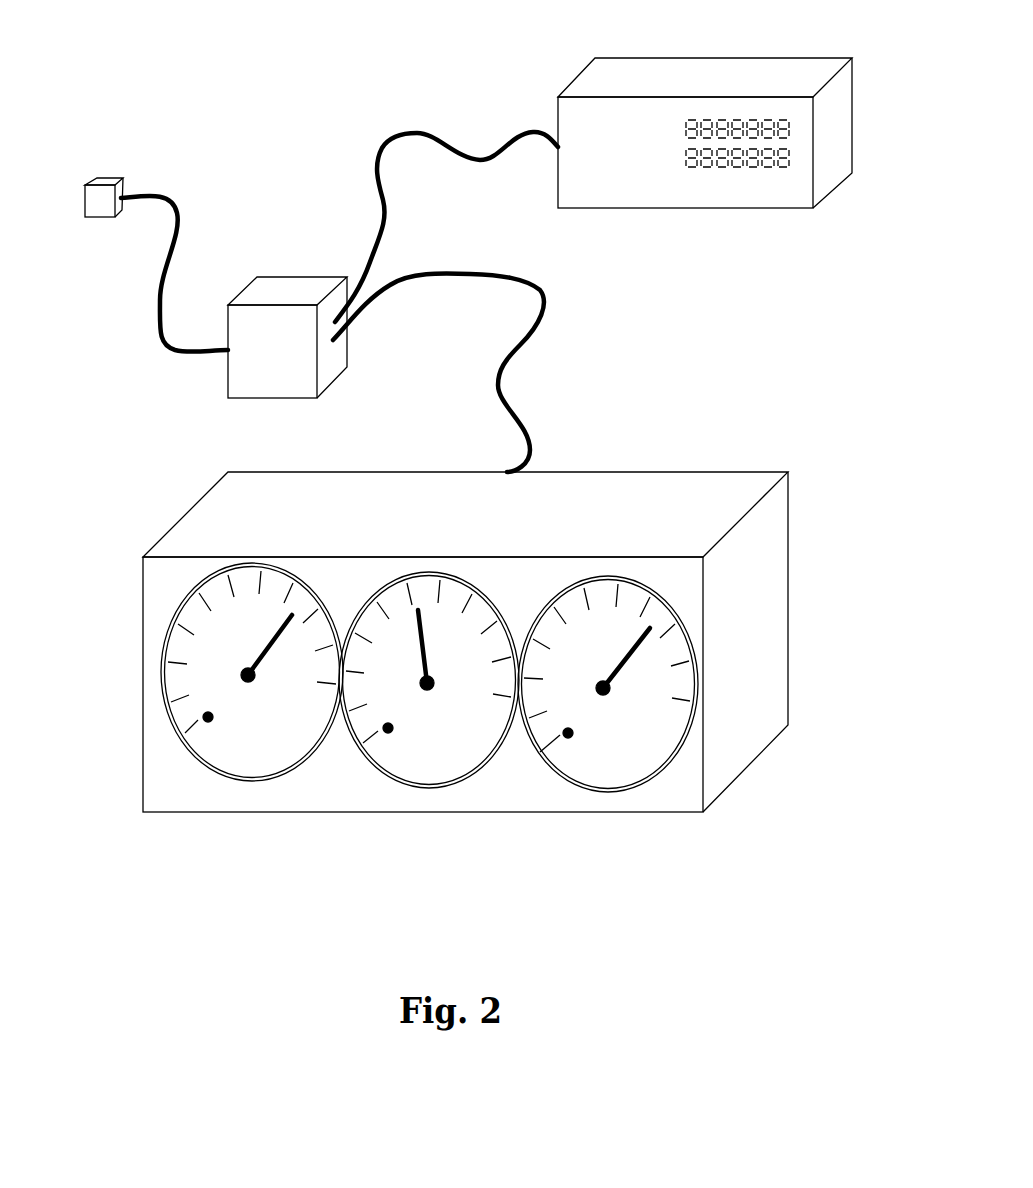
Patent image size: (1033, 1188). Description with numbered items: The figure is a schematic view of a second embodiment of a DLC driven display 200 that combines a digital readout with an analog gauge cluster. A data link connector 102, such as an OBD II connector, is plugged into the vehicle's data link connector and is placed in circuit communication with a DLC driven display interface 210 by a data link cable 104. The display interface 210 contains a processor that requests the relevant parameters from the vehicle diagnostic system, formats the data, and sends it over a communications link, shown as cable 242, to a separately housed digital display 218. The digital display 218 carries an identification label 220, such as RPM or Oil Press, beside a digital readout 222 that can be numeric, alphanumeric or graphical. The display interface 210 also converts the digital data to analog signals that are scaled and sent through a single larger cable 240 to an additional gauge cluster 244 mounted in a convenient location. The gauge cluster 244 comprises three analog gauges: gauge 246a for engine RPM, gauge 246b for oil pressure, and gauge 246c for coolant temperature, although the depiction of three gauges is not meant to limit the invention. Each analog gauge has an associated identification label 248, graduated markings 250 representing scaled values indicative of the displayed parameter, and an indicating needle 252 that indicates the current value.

The DLC driven display 200 is at (378, 50).
The data link connector 102 is at (110, 177).
The data link cable 104 is at (173, 248).
The DLC driven display interface 210 is at (283, 277).
The display cable 242 is at (407, 132).
The cable 240 is at (537, 283).
The digital display 218 is at (705, 134).
The identification label 220 is at (708, 185).
The digital readout 222 is at (695, 200).
The gauge cluster 244 is at (667, 470).
The analog gauge 246a is at (213, 707).
The analog gauge 246b is at (428, 716).
The analog gauge 246c is at (604, 719).
The identification label 248 is at (223, 747).
The graduated markings 250 is at (190, 688).
The indicating needle 252 is at (258, 652).